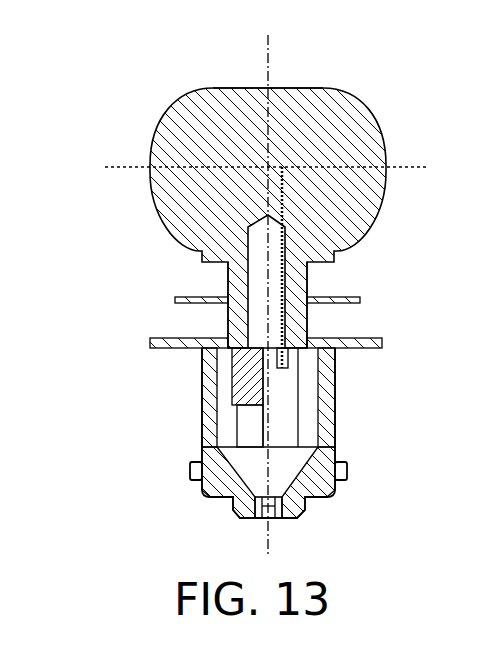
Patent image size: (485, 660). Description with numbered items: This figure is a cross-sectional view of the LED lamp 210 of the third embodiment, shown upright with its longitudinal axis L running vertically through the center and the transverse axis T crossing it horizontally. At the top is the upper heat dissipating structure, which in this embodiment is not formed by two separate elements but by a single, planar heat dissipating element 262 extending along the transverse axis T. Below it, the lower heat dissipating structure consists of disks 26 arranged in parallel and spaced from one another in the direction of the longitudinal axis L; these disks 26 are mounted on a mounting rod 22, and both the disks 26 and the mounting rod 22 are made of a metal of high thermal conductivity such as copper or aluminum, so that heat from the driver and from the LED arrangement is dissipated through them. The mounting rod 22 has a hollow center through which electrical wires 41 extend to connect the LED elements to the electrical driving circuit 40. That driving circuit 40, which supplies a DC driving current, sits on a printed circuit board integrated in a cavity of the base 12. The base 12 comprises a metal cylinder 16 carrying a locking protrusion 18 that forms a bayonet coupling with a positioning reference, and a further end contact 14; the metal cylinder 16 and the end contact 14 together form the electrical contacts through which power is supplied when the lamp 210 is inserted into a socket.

The LED lamp 210 is at (148, 92).
The planar heat dissipating element 262 is at (316, 88).
The electrical wires 41 is at (288, 227).
The mounting rod 22 is at (309, 272).
The disks 26 is at (200, 252).
The base 12 is at (155, 421).
The metal cylinder 16 is at (337, 417).
The electrical driving circuit 40 is at (290, 421).
The locking protrusion 18 is at (190, 470).
The end contact 14 is at (272, 518).
The longitudinal axis L is at (268, 53).
The transverse axis T is at (398, 166).